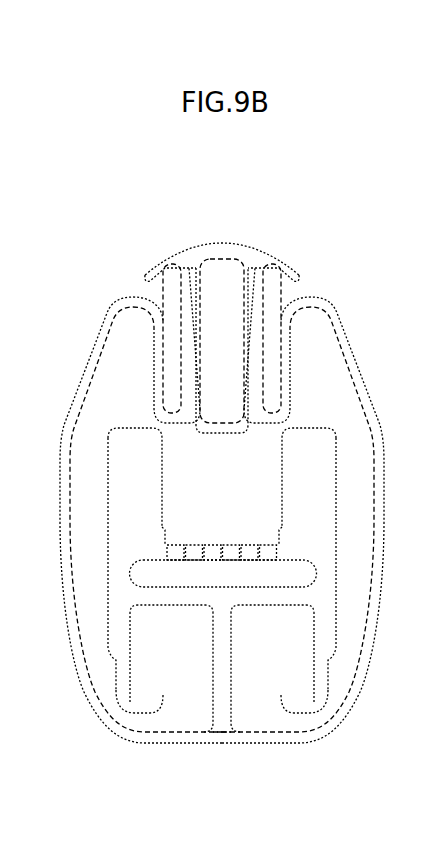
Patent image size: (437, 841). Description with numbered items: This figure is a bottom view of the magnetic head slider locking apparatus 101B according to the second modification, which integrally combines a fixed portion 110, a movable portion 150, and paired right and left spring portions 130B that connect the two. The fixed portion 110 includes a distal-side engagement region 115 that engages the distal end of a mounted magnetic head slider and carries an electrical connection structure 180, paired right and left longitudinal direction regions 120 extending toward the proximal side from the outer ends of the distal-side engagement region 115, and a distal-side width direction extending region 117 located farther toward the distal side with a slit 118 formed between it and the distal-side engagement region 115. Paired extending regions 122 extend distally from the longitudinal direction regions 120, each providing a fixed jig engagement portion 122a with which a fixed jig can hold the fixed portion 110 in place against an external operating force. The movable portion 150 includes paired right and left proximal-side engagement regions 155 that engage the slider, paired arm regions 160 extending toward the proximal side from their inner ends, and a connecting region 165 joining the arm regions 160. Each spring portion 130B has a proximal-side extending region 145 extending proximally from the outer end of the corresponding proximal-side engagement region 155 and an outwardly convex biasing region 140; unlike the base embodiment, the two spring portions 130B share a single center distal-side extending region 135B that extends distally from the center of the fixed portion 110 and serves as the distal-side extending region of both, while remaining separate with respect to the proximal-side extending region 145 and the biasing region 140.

The magnetic head slider locking apparatus 101B is at (225, 466).
The spring portions 130B is at (225, 520).
The biasing region 140 is at (222, 519).
The movable portion 150 is at (212, 238).
The connecting region 165 is at (222, 235).
The arm regions 160 is at (222, 346).
The proximal-side extending region 145 is at (218, 339).
The proximal-side engagement regions 155 is at (222, 434).
The longitudinal direction regions 120 is at (222, 477).
The electrical connection structure 180 is at (222, 510).
The distal-side engagement region 115 is at (222, 524).
The slit 118 is at (223, 574).
The distal-side width direction extending region 117 is at (171, 660).
The fixed portion 110 is at (272, 668).
The extending regions 122 is at (219, 566).
The fixed jig engagement portion 122a is at (222, 685).
The distal-side extending region 135B is at (192, 735).